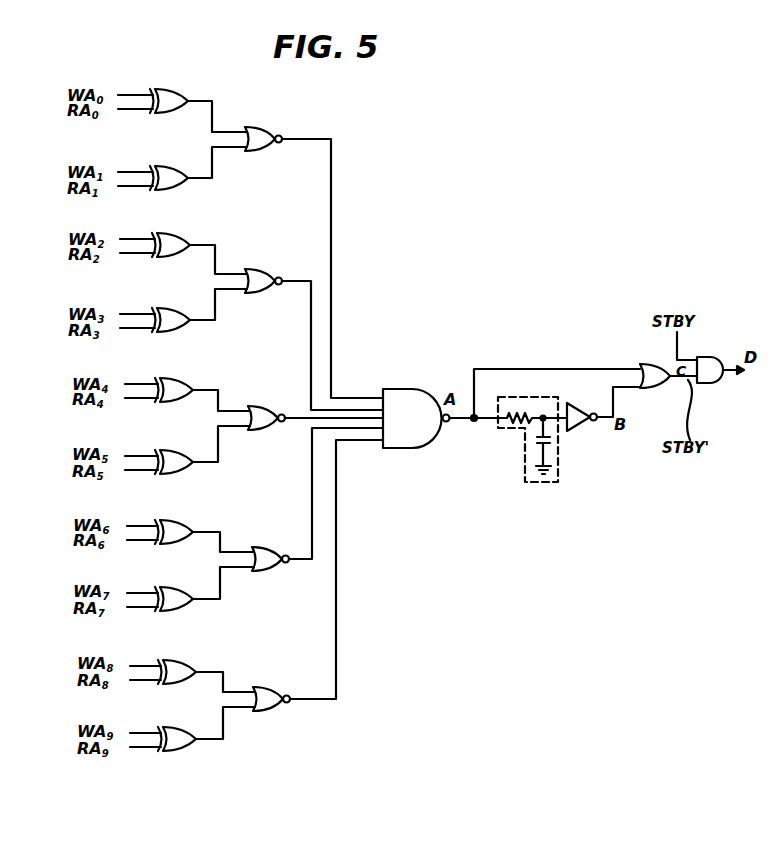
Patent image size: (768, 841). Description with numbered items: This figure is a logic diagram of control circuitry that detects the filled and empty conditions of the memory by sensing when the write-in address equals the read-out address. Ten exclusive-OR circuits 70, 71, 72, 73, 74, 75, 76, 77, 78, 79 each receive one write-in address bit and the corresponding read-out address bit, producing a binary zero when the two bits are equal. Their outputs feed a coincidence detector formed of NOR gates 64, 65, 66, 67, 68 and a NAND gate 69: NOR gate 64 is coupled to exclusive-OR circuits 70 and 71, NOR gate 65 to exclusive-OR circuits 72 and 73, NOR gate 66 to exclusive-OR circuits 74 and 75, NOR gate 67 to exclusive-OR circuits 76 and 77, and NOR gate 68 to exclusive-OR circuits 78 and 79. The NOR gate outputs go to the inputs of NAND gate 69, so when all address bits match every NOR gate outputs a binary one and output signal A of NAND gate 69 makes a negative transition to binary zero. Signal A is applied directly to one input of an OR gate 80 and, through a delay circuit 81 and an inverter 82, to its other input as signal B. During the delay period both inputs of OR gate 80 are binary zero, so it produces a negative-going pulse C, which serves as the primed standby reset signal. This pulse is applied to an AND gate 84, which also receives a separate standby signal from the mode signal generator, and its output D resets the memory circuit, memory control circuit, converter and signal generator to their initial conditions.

The NOR gate 64 is at (260, 152).
The NOR gate 65 is at (262, 295).
The NOR gate 66 is at (267, 431).
The NOR gate 67 is at (272, 572).
The NOR gate 68 is at (270, 713).
The NAND gate 69 is at (423, 450).
The exclusive-OR circuit 70 is at (168, 114).
The exclusive-OR circuit 71 is at (167, 191).
The exclusive-OR circuit 72 is at (170, 258).
The exclusive-OR circuit 73 is at (176, 333).
The exclusive-OR circuit 74 is at (170, 403).
The exclusive-OR circuit 75 is at (180, 473).
The exclusive-OR circuit 76 is at (170, 543).
The exclusive-OR circuit 77 is at (173, 611).
The exclusive-OR circuit 78 is at (172, 685).
The exclusive-OR circuit 79 is at (180, 752).
The OR gate 80 is at (644, 389).
The delay circuit 81 is at (525, 467).
The inverter 82 is at (577, 428).
The AND gate 84 is at (716, 383).